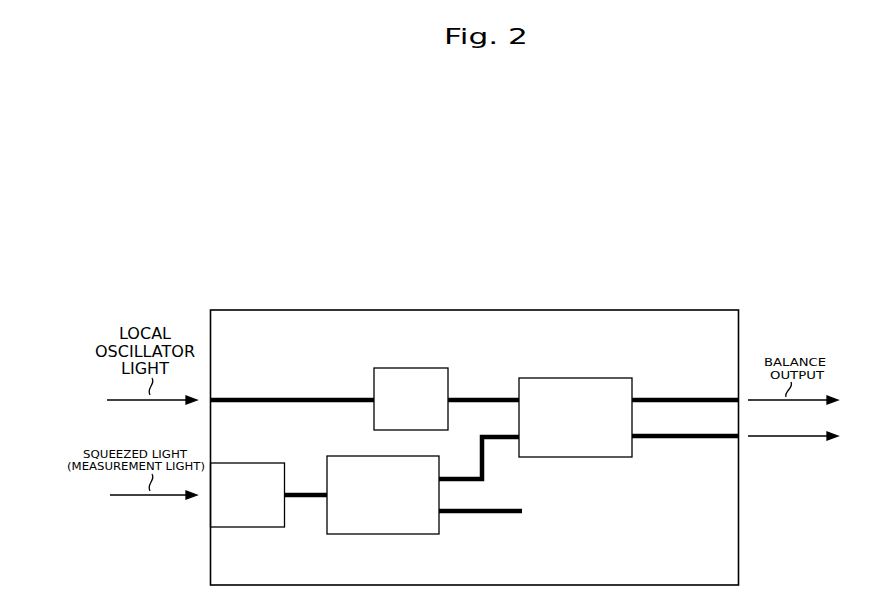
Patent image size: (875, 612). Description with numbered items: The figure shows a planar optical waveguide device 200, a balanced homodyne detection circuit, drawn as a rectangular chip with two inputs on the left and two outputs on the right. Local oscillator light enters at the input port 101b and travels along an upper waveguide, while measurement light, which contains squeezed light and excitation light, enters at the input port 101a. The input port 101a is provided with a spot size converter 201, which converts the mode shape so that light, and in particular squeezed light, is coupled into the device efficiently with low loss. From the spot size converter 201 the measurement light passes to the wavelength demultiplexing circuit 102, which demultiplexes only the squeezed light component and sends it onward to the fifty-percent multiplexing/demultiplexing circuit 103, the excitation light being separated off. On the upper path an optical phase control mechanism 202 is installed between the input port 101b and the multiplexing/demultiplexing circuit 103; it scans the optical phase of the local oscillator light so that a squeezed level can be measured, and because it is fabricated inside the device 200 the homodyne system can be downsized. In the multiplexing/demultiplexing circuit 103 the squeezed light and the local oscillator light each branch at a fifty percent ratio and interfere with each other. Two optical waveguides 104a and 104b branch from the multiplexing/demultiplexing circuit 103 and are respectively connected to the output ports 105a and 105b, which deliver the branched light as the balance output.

The planar optical waveguide device 200 is at (768, 288).
The input port of local oscillator light 101b is at (210, 400).
The input port of measurement light 101a is at (210, 497).
The spot size converter 201 is at (243, 528).
The wavelength demultiplexing circuit 102 is at (383, 535).
The optical phase control mechanism 202 is at (410, 367).
The 50% multiplexing/demultiplexing circuit 103 is at (575, 377).
The optical waveguide 104b is at (680, 398).
The optical waveguide 104a is at (683, 438).
The output port 105b is at (741, 398).
The output port 105a is at (741, 438).